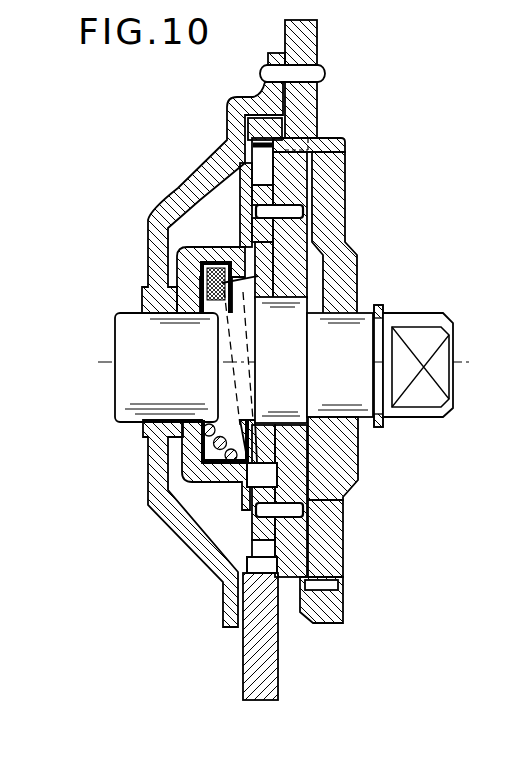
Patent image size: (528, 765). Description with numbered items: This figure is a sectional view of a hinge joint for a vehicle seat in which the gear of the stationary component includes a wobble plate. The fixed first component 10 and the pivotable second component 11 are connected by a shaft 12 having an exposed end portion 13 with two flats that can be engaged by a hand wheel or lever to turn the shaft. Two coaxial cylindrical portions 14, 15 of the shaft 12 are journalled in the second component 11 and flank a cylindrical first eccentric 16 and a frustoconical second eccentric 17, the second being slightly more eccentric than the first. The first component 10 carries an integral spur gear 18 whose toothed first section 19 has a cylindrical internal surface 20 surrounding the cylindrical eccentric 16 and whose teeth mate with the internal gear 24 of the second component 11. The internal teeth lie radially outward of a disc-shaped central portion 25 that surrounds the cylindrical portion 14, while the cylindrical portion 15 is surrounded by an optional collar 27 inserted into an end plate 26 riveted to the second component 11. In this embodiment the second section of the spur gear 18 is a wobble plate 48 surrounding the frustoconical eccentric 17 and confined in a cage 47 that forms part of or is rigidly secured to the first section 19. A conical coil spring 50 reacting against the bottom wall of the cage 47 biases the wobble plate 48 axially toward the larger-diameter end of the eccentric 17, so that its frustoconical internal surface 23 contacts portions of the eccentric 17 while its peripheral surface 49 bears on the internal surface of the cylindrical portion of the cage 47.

The first component 10 is at (255, 665).
The second component 11 is at (308, 50).
The shaft 12 is at (453, 353).
The exposed end portion 13 is at (408, 313).
The cylindrical portion 14 is at (358, 351).
The cylindrical portion 15 is at (185, 356).
The cylindrical first eccentric 16 is at (296, 407).
The frustoconical second eccentric 17 is at (268, 287).
The spur gear 18 is at (338, 563).
The toothed annular first section 19 is at (308, 538).
The cylindrical internal surface 20 is at (287, 464).
The frustoconical internal surface 23 is at (240, 427).
The internal gear 24 is at (300, 588).
The disc-shaped central portion 25 is at (329, 192).
The end plate 26 is at (150, 236).
The collar 27 is at (143, 428).
The cage 47 is at (183, 258).
The wobble plate 48 is at (148, 277).
The peripheral surface 49 is at (225, 252).
The conical coil spring 50 is at (183, 452).